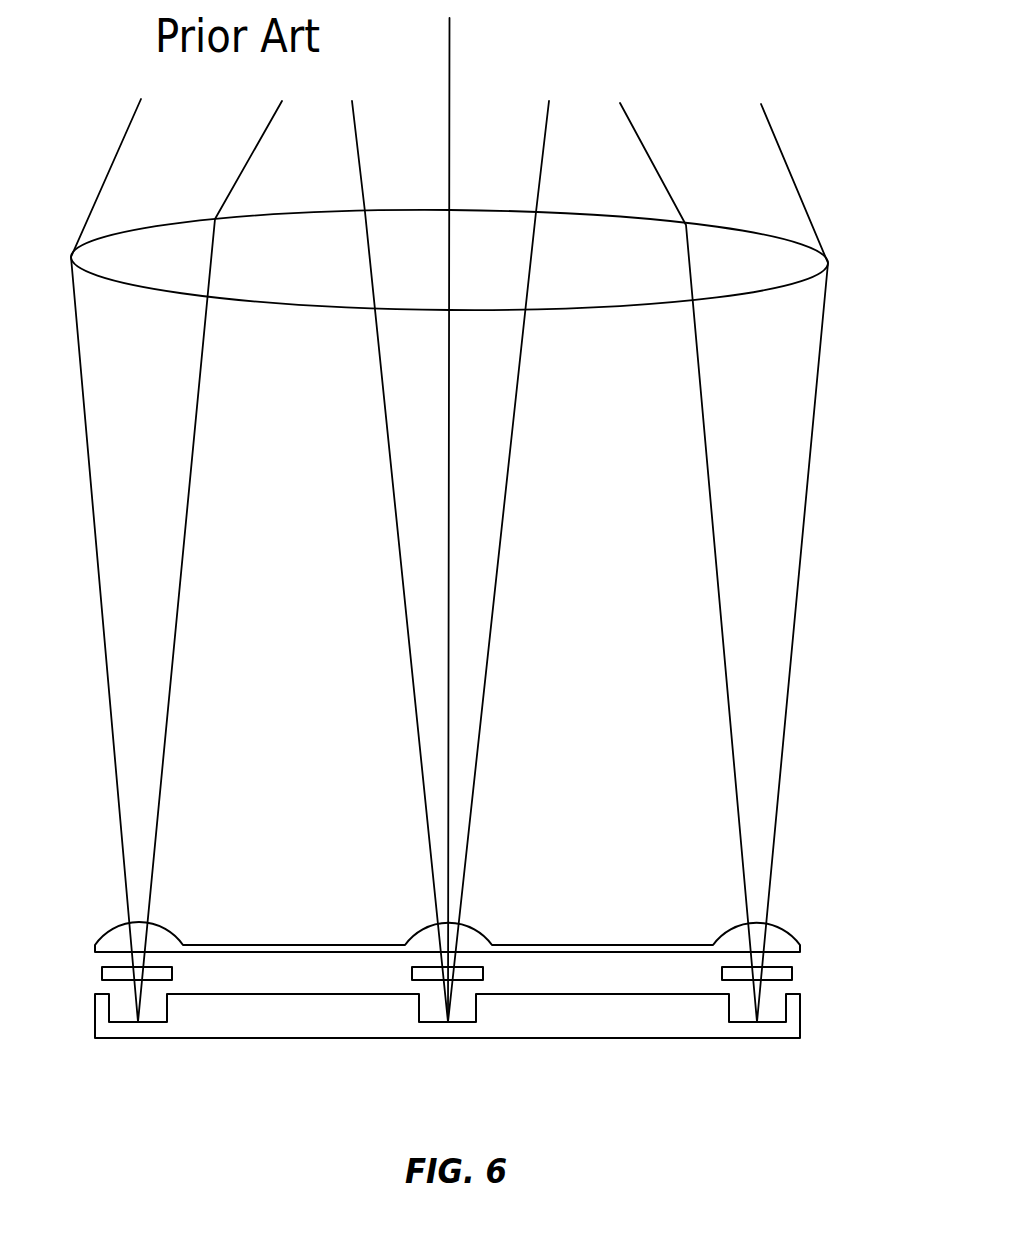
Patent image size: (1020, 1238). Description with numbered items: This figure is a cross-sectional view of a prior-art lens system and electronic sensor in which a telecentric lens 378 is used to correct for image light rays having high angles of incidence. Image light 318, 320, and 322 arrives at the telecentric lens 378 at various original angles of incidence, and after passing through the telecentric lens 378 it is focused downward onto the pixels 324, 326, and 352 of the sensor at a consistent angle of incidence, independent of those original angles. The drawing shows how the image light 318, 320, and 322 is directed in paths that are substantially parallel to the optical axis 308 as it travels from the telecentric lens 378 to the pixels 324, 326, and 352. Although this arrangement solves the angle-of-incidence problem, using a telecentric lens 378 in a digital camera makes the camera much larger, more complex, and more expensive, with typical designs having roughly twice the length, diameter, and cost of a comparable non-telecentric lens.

The optical axis 308 is at (450, 82).
The telecentric lens 378 is at (800, 246).
The image light 322 is at (117, 797).
The image light 320 is at (422, 799).
The image light 318 is at (735, 800).
The pixel 352 is at (138, 1046).
The pixel 326 is at (446, 1046).
The pixel 324 is at (758, 1046).